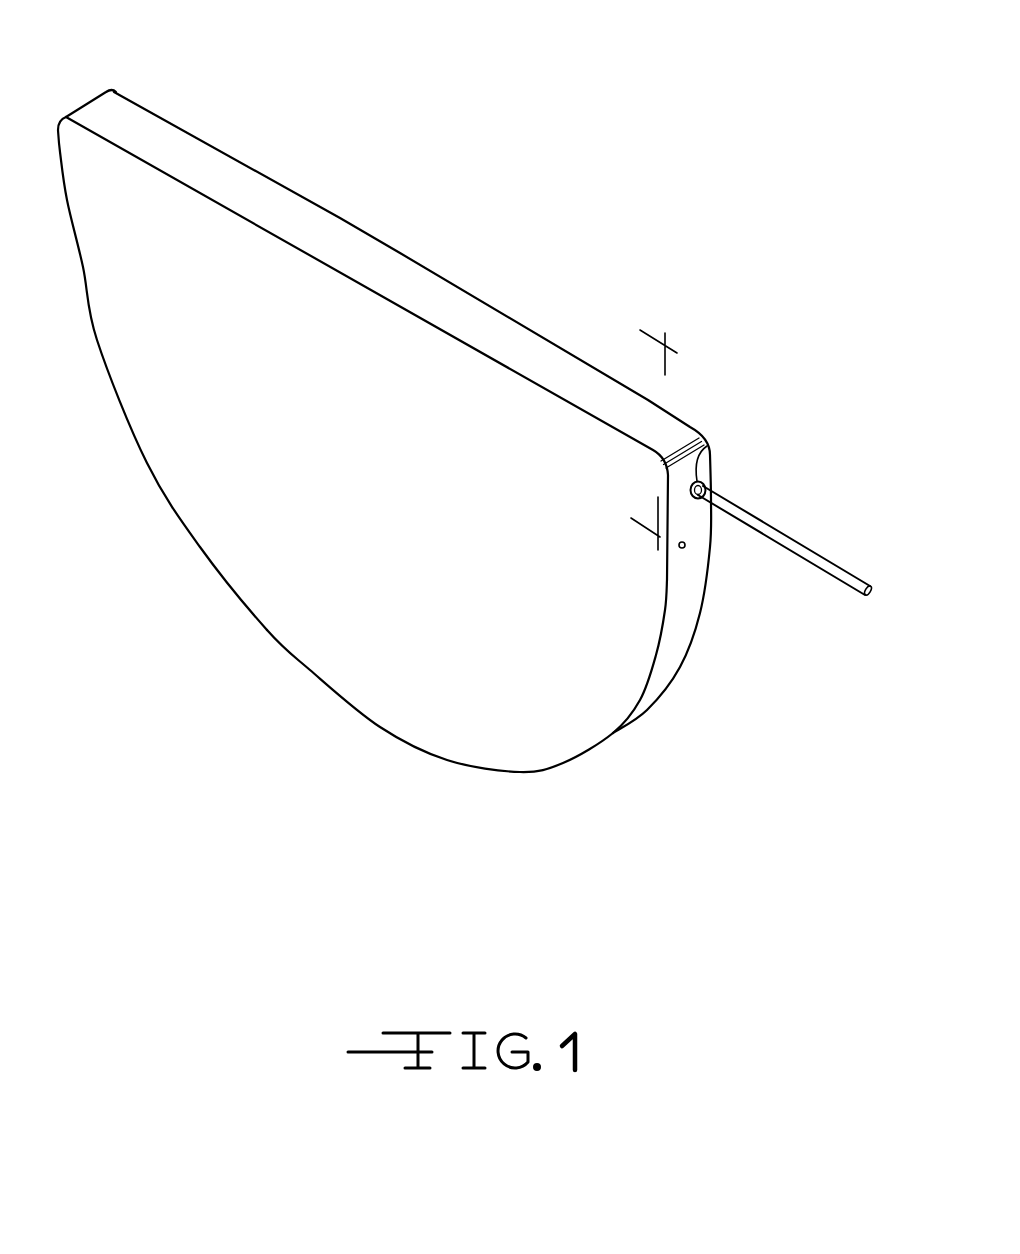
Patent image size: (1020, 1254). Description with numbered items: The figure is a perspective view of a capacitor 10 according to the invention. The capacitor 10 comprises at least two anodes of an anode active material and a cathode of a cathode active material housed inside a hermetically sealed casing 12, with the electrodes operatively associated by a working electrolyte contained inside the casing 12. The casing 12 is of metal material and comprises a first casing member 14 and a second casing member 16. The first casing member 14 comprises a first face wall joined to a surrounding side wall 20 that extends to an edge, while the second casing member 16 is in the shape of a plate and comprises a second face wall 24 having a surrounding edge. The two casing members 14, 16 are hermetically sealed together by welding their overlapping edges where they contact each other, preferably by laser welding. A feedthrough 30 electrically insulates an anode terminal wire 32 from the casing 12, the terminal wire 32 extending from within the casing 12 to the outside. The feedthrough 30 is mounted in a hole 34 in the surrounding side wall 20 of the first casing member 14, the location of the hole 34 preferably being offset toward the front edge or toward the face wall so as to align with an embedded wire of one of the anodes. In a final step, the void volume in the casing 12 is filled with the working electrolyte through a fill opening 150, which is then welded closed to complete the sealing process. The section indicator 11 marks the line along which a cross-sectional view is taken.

The capacitor 10 is at (437, 207).
The casing 12 is at (76, 90).
The first casing member 14 is at (533, 330).
The second casing member 16 is at (147, 463).
The surrounding side wall 20 is at (570, 385).
The second face wall 24 is at (333, 652).
The feedthrough 30 is at (782, 498).
The anode terminal wire 32 is at (833, 562).
The hole 34 is at (707, 447).
The fill opening 150 is at (692, 547).
The section line 11- 11 is at (648, 430).